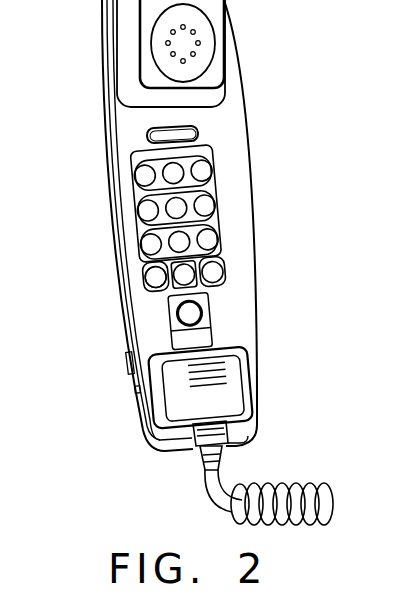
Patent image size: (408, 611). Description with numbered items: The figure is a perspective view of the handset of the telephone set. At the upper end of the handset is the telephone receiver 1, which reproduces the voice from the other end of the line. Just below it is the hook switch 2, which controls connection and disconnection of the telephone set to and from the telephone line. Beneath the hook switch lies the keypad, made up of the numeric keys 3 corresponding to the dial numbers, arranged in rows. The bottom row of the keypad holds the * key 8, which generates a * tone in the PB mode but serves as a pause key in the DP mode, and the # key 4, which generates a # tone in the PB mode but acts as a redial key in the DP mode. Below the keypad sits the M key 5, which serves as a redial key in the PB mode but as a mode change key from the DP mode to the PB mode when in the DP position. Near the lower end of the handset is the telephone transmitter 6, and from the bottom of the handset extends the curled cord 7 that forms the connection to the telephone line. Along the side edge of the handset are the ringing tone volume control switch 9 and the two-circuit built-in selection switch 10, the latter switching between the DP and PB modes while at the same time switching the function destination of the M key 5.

The telephone receiver 1 is at (207, 38).
The hook switch 2 is at (198, 128).
The numeric keys 3 is at (215, 157).
The # key 4 is at (222, 275).
The M key 5 is at (203, 313).
The telephone transmitter 6 is at (232, 362).
The curled cord 7 is at (312, 487).
The * key 8 is at (145, 272).
The ringing tone volume control switch 9 is at (130, 367).
The two-circuit built-in selection switch 10 is at (137, 402).